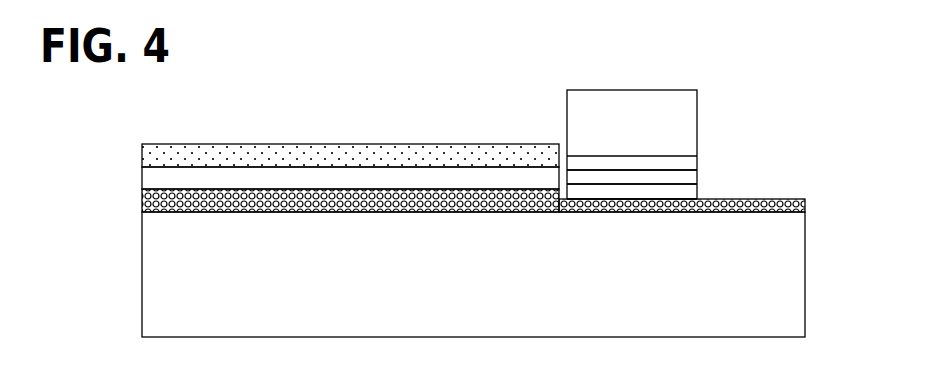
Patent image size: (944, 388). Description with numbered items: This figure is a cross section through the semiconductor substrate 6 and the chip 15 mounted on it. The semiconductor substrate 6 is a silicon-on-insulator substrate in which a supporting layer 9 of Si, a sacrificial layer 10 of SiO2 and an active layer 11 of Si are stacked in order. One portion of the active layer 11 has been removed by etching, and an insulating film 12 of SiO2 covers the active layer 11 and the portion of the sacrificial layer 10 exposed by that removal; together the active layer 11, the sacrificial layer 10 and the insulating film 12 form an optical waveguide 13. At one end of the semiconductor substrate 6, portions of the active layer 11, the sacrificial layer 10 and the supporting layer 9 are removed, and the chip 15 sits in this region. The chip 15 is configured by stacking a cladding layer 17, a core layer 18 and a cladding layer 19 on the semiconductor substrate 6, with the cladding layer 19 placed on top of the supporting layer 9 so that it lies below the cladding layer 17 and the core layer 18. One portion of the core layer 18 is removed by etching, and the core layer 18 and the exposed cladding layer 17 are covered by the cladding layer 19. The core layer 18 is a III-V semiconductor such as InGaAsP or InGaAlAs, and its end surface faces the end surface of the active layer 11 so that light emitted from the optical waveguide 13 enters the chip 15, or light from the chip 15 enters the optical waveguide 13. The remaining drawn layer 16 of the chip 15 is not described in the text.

The semiconductor substrate 6 is at (140, 311).
The supporting layer 9 is at (153, 248).
The sacrificial layer 10 is at (145, 199).
The active layer 11 is at (152, 178).
The insulating film 12 is at (146, 152).
The optical waveguide 13 is at (468, 143).
The chip 15 is at (640, 89).
The first metal layer 16 is at (687, 110).
The cladding layer 17 is at (686, 163).
The core layer 18 is at (688, 180).
The cladding layer 19 is at (687, 193).